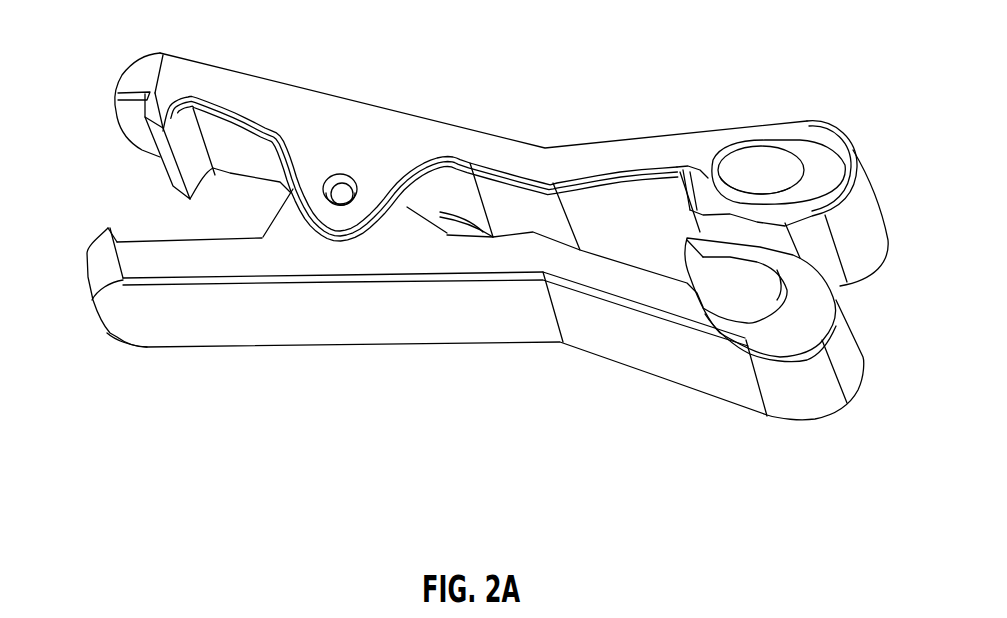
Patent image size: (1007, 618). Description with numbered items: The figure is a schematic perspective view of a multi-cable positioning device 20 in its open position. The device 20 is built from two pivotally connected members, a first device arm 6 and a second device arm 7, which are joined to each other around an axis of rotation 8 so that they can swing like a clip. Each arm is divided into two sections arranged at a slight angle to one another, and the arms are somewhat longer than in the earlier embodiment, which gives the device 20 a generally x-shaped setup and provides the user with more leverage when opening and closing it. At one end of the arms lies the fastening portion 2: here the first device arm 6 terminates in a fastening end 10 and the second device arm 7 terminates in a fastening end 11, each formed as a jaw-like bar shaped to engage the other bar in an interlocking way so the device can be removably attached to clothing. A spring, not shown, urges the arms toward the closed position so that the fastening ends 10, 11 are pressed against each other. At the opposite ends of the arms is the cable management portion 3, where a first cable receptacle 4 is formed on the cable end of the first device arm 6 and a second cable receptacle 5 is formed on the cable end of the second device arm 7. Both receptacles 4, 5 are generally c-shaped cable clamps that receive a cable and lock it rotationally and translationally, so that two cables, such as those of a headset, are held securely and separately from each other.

The fastening portion 2 is at (491, 212).
The cable management portion 3 is at (821, 189).
The first cable receptacle 4 is at (763, 160).
The second cable receptacle 5 is at (810, 327).
The first device arm 6 is at (519, 159).
The second device arm 7 is at (469, 324).
The axis of rotation 8 is at (343, 173).
The fastening end 10 is at (160, 107).
The fastening end 11 is at (130, 250).
The multi-cable positioning device 20 is at (188, 101).